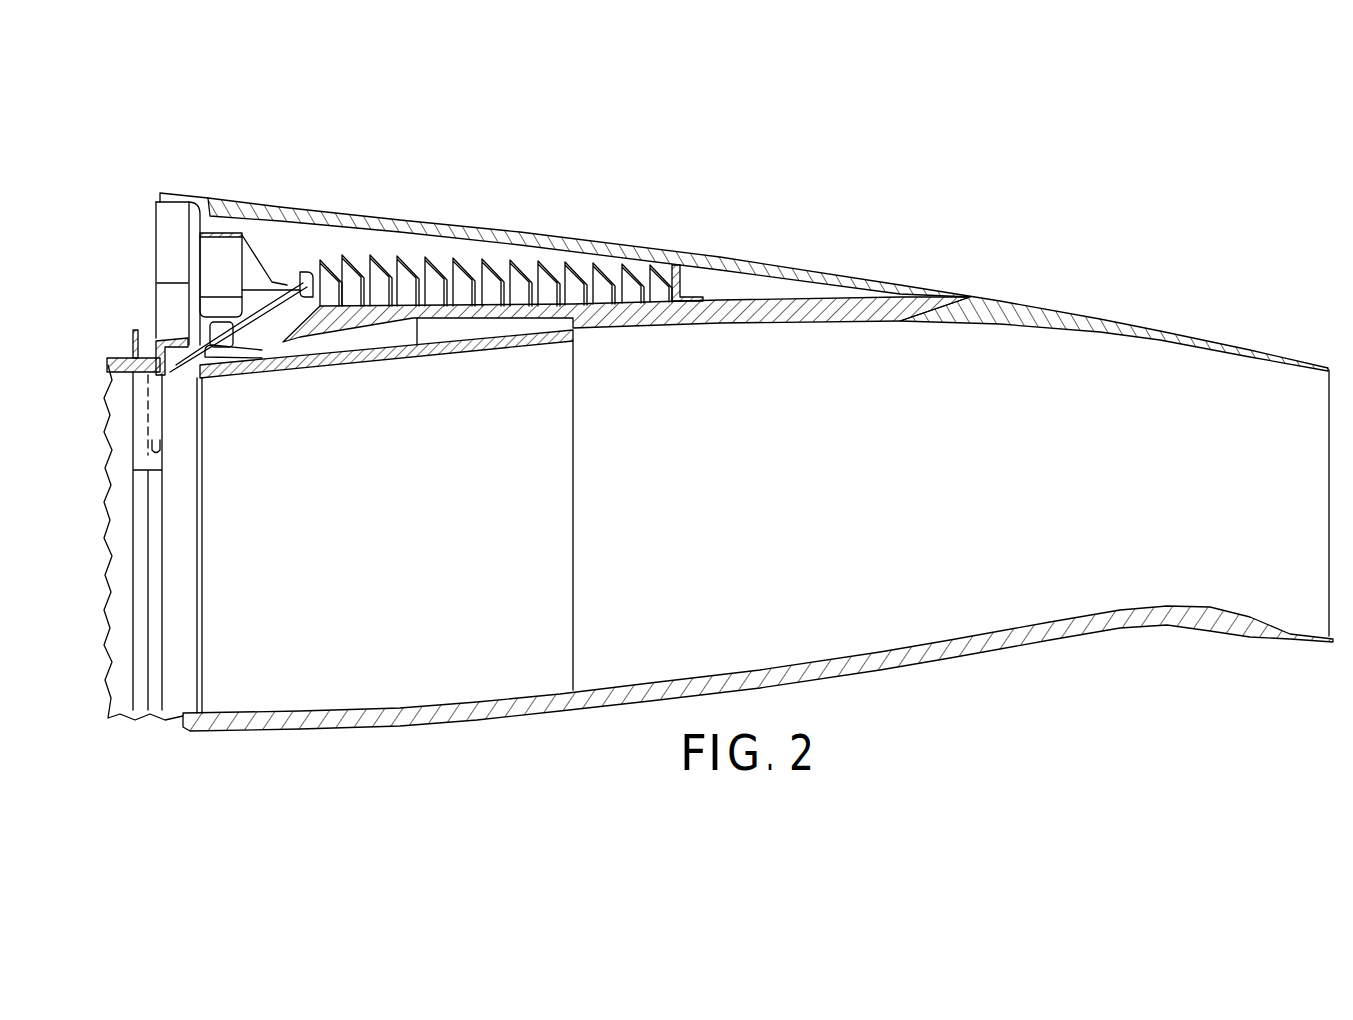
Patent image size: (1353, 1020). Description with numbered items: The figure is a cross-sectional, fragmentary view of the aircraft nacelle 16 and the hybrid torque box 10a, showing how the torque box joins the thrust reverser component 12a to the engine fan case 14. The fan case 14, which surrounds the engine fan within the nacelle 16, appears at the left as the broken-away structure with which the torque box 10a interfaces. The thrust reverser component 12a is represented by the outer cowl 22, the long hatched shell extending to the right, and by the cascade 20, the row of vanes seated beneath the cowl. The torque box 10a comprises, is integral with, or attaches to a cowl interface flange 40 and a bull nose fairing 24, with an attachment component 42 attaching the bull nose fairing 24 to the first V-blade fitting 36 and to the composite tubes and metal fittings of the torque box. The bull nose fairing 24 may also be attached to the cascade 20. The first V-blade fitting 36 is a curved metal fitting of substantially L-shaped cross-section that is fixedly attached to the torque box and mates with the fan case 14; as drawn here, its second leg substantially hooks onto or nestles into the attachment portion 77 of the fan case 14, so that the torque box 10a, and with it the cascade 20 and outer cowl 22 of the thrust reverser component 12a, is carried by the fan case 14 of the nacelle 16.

The aircraft nacelle 16 is at (188, 114).
The cowl interface flange 40 is at (212, 216).
The hybrid torque box 10a is at (257, 258).
The cascade 20 is at (330, 247).
The outer cowl 22 is at (467, 230).
The thrust reverser component 12a is at (606, 224).
The first V-blade fitting 36 is at (170, 336).
The engine fan case 14 is at (110, 345).
The bull nose fairing 24 is at (277, 327).
The attachment component 42 is at (225, 352).
The attachment portion 77 is at (172, 348).